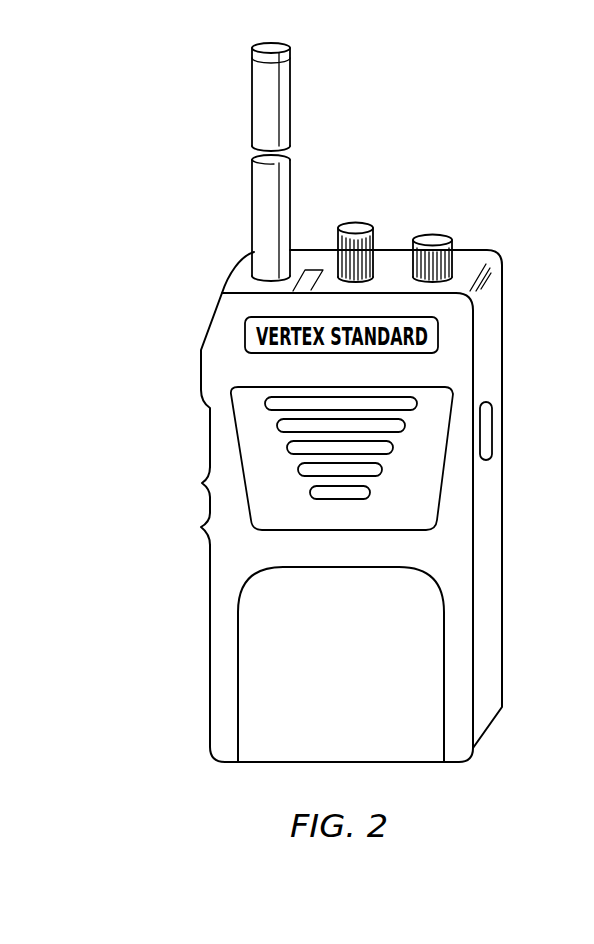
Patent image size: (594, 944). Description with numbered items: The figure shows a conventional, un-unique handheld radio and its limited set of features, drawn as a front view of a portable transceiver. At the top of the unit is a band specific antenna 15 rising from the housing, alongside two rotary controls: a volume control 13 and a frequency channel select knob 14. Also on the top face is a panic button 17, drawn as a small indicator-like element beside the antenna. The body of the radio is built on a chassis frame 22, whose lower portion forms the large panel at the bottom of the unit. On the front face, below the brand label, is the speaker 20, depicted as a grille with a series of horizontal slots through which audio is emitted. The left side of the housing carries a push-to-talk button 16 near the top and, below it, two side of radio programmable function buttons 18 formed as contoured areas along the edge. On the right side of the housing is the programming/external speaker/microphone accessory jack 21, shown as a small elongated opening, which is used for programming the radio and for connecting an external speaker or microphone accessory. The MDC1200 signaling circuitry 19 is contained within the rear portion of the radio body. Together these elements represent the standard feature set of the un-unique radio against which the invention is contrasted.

The volume control 13 is at (447, 234).
The frequency channel select knob 14 is at (375, 226).
The band specific antenna 15 is at (293, 167).
The push-to-talk button 16 is at (197, 357).
The panic button 17 is at (319, 262).
The side of radio programmable function buttons 18 is at (199, 530).
The MDC1200 signaling circuitry 19 is at (481, 615).
The speaker 20 is at (421, 412).
The programming/external speaker/microphone accessory jack 21 is at (495, 418).
The chassis frame 22 is at (237, 697).